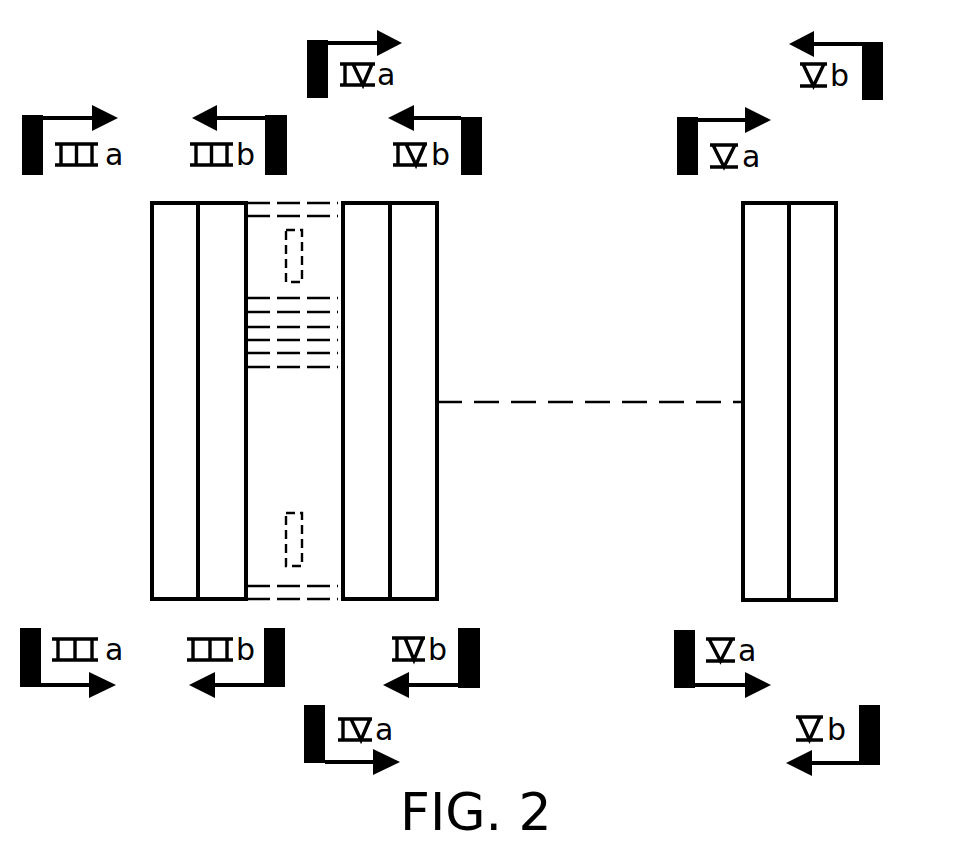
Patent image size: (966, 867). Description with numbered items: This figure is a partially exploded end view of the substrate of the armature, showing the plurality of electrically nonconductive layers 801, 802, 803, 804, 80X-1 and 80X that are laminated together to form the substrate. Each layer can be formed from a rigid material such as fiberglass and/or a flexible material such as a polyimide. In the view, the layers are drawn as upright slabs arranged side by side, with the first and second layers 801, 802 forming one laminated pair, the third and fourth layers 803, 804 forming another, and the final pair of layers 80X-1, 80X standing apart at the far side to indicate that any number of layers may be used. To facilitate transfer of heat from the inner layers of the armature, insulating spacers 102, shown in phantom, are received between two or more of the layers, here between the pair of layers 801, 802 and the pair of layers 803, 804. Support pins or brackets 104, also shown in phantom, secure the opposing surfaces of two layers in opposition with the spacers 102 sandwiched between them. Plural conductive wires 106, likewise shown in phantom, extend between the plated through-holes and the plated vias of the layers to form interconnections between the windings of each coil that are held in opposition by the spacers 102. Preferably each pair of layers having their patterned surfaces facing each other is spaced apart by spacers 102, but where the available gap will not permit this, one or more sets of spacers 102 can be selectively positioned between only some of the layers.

The electrically nonconductive layer 801 is at (152, 454).
The electrically nonconductive layer 802 is at (220, 203).
The electrically nonconductive layer 803 is at (357, 203).
The electrically nonconductive layer 804 is at (437, 265).
The electrically nonconductive layer 80X-1 is at (743, 278).
The electrically nonconductive layer 80X is at (836, 315).
The insulating spacer 102 is at (302, 250).
The support pin/bracket 104 is at (313, 598).
The conductive wire 106 is at (302, 365).